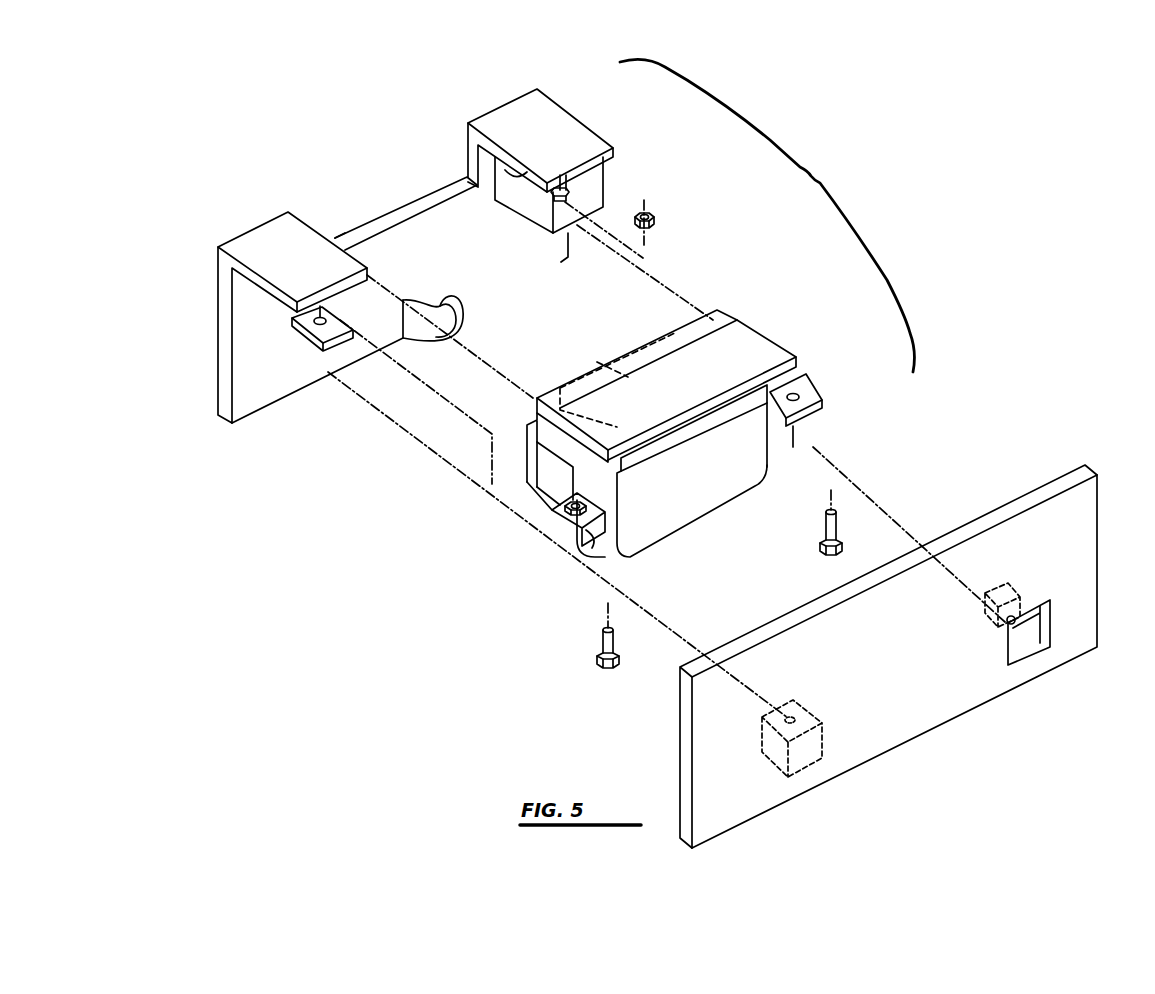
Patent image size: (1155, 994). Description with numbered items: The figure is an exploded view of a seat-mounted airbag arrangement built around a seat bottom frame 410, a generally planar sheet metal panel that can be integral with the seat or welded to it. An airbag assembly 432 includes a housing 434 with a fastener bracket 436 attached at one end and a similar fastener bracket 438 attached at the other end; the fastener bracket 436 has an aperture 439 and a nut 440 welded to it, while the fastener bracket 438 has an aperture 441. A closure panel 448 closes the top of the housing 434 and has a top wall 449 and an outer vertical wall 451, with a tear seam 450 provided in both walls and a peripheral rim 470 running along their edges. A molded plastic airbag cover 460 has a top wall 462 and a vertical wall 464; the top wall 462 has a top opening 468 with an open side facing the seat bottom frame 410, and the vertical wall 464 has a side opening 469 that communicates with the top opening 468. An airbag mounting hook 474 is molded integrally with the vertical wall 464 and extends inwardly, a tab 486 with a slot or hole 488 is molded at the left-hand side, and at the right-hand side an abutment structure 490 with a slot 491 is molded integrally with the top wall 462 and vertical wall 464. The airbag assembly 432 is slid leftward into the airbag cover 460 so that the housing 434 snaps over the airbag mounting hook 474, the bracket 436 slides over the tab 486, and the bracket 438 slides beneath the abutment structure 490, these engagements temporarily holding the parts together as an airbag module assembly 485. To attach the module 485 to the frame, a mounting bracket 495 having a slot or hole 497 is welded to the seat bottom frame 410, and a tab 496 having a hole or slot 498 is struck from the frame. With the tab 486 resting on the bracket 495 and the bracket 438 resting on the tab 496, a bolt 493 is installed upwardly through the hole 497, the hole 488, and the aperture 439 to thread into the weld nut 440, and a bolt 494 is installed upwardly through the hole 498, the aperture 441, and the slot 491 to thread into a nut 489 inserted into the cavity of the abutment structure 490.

The seat bottom frame 410 is at (1116, 548).
The airbag assembly 432 is at (712, 413).
The housing 434 is at (642, 523).
The fastener bracket 436 is at (588, 530).
The fastener bracket 438 is at (820, 400).
The aperture 439 is at (575, 502).
The nut 440 is at (565, 507).
The aperture 441 is at (798, 396).
The closure panel 448 is at (727, 372).
The top wall 449 is at (655, 412).
The tear seam 450 is at (587, 410).
The outer vertical wall 451 is at (533, 397).
The airbag cover 460 is at (565, 92).
The top wall 462 is at (512, 115).
The vertical wall 464 is at (222, 319).
The top opening 468 is at (357, 261).
The side opening 469 is at (411, 208).
The peripheral rim 470 is at (540, 444).
The airbag mounting hook 474 is at (443, 316).
The airbag module assembly 485 is at (767, 215).
The tab 486 is at (297, 323).
The slot or hole 488 is at (327, 318).
The nut 489 is at (654, 216).
The abutment structure 490 is at (583, 203).
The slot 491 is at (573, 193).
The bolt 493 is at (603, 644).
The bolt 494 is at (822, 534).
The mounting bracket 495 is at (815, 768).
The tab 496 is at (1012, 592).
The slot or hole 497 is at (788, 715).
The hole or slot 498 is at (995, 600).